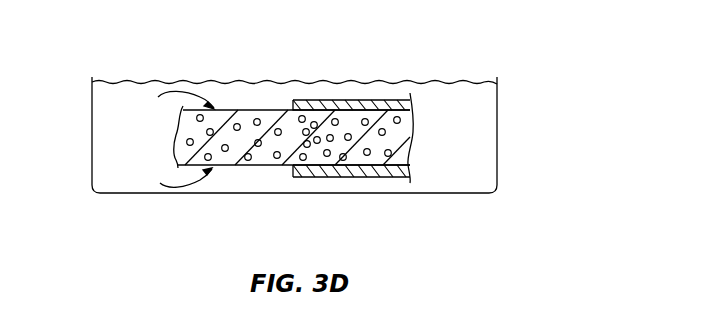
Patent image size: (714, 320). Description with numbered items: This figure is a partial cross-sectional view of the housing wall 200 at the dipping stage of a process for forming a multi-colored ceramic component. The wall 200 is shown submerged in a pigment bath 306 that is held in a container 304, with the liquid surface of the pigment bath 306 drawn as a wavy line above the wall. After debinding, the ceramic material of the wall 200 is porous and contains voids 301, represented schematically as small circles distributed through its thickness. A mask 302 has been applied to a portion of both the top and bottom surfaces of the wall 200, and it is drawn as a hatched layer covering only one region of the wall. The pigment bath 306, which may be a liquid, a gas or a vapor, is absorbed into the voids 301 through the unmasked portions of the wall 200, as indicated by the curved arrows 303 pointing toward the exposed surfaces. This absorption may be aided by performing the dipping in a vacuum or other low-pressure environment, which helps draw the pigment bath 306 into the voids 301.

The wall 200 is at (294, 119).
The voids 301 is at (235, 116).
The mask 302 is at (361, 100).
The arrows 303 is at (197, 94).
The container 304 is at (497, 115).
The pigment bath 306 is at (432, 82).